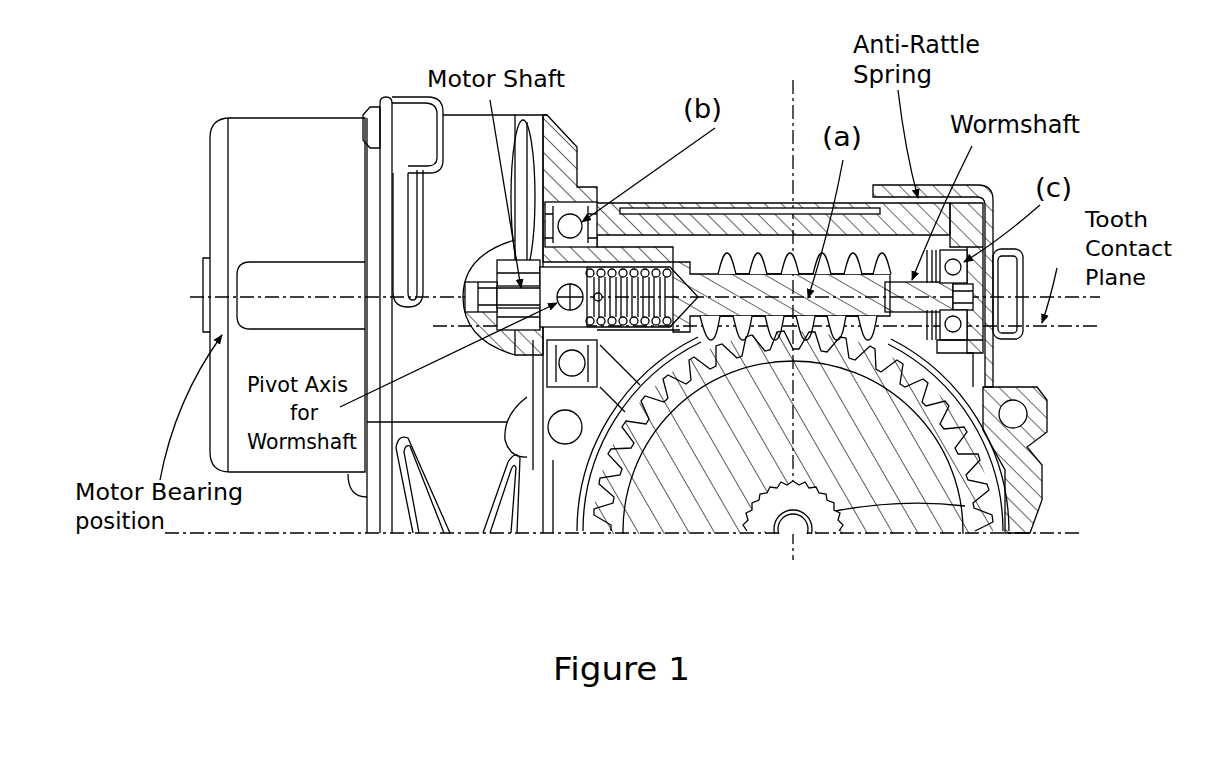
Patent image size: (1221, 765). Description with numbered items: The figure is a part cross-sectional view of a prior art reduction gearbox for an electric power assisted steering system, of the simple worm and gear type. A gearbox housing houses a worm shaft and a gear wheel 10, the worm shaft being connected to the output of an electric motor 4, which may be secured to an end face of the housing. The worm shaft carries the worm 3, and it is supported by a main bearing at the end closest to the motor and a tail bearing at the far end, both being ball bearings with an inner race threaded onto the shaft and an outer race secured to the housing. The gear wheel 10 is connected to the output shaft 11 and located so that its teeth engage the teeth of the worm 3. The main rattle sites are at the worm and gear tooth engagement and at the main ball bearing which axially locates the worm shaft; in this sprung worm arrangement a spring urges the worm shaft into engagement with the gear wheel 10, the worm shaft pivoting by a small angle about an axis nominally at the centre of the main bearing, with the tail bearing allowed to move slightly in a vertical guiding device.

The electric motor 4 is at (296, 182).
The worm 3 is at (757, 250).
The gear wheel 10 is at (950, 418).
The output shaft 11 is at (840, 510).